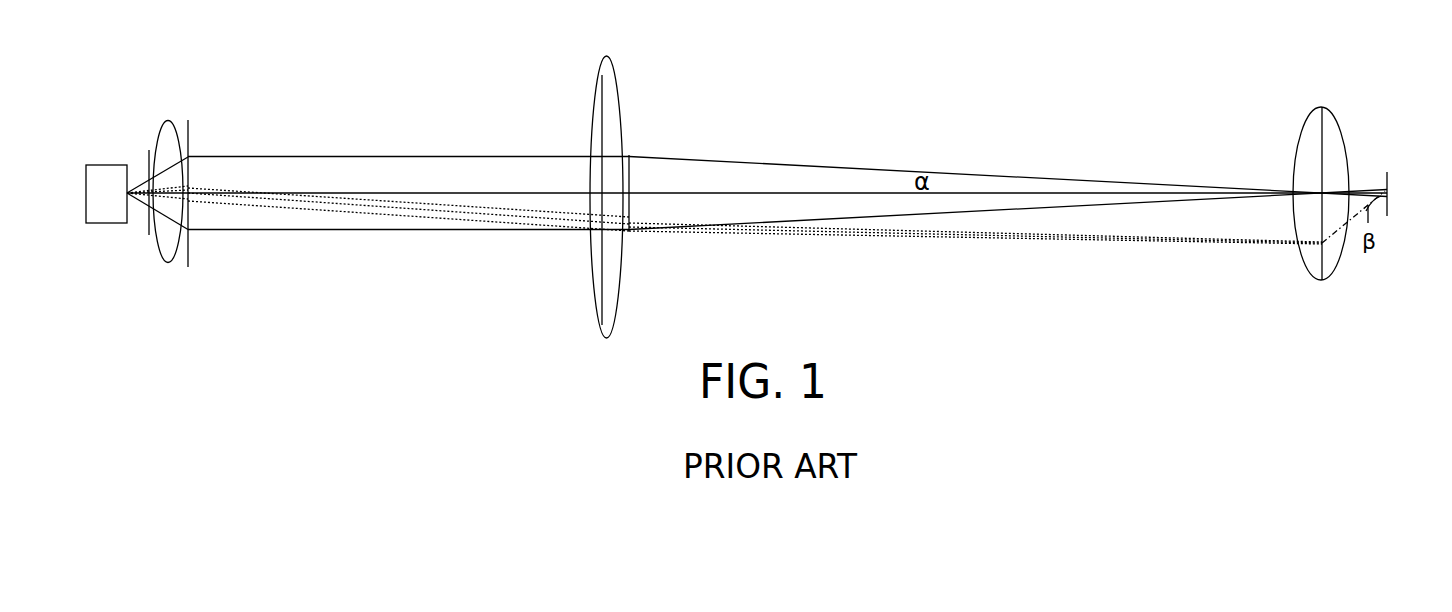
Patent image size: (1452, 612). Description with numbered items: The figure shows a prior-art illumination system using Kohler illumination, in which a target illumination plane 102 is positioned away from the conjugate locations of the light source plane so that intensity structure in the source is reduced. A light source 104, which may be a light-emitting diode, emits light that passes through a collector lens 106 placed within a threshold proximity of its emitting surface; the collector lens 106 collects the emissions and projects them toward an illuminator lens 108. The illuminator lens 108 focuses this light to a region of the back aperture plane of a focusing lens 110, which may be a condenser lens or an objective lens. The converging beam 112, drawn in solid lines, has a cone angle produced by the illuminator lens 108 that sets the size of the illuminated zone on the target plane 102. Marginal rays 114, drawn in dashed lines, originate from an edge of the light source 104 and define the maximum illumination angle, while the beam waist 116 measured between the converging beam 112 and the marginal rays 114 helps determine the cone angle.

The target illumination plane 102 is at (1387, 172).
The light source 104 is at (98, 165).
The collector lens 106 is at (170, 120).
The illuminator lens 108 is at (605, 56).
The focusing lens 110 is at (1318, 108).
The converging beam 112 is at (950, 149).
The marginal rays 114 is at (1028, 258).
The beam waist 116 is at (632, 163).